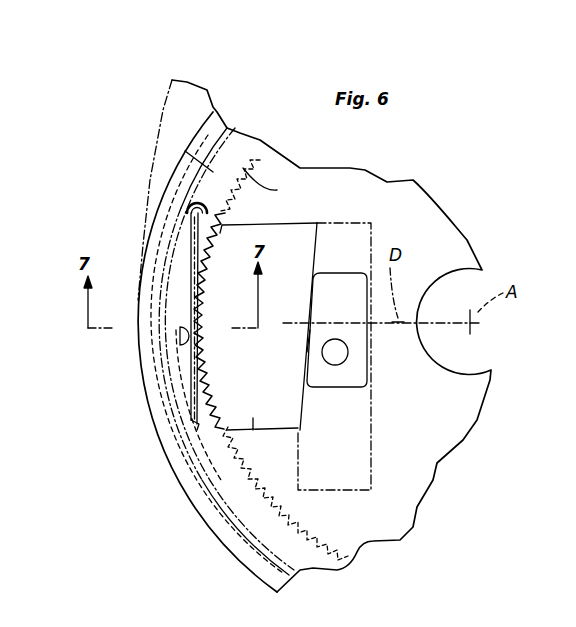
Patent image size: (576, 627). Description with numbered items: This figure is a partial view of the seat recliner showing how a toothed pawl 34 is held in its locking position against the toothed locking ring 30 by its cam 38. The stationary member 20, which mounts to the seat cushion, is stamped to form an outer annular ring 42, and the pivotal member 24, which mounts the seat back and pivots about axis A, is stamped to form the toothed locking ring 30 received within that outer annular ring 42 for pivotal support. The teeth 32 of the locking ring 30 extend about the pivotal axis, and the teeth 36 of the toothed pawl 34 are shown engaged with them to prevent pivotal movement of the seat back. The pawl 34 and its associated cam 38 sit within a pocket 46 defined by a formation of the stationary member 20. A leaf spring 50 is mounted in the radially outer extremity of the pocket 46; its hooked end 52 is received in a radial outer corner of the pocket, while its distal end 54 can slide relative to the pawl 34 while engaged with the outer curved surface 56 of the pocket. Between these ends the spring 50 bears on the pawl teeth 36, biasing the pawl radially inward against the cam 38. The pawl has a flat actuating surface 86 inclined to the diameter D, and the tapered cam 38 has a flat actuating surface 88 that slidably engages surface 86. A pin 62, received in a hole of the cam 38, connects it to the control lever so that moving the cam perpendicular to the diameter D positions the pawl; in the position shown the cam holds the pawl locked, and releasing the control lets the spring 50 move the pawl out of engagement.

The stationary member 20 is at (251, 128).
The pivotal member 24 is at (158, 88).
The toothed locking ring 30 is at (182, 148).
The teeth 32 is at (228, 183).
The toothed pawls 34 is at (200, 512).
The teeth 36 is at (190, 470).
The cams 38 is at (348, 378).
The outer annular ring 42 is at (189, 222).
The pockets 46 is at (283, 234).
The springs 50 is at (193, 283).
The hooked end 52 is at (187, 200).
The distal end 54 is at (193, 418).
The outer curved surface 56 is at (160, 360).
The pin 62 is at (348, 354).
The flat actuating surface 86 is at (313, 303).
The flat actuating surface 88 is at (312, 338).